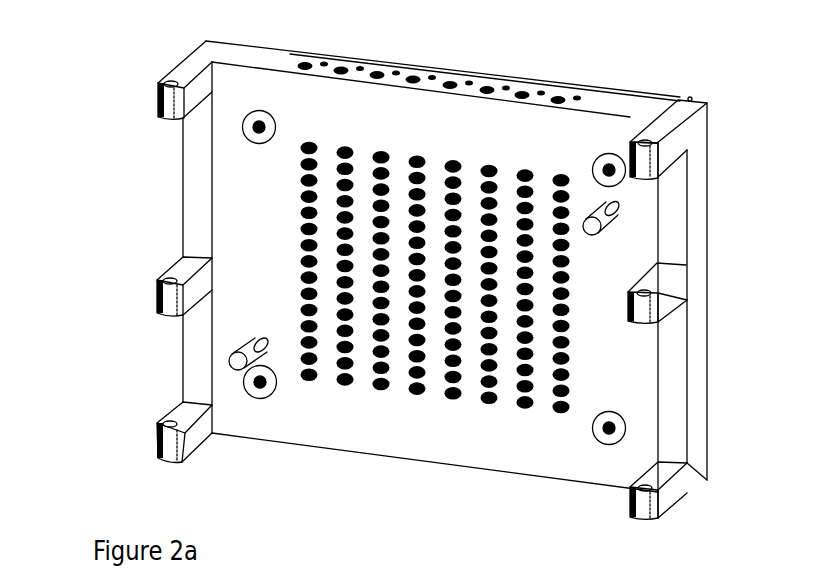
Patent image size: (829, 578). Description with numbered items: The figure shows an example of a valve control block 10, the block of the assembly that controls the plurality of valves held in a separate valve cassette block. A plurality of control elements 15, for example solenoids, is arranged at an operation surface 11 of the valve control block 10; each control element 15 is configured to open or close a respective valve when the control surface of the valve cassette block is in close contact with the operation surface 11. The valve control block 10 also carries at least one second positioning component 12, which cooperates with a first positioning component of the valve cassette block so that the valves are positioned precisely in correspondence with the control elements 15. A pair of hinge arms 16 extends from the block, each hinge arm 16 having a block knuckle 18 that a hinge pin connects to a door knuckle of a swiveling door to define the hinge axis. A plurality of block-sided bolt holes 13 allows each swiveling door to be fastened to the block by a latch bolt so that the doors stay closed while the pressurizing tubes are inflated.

The valve control block 10 is at (242, 218).
The operation surface 11 is at (479, 443).
The second positioning component 12 is at (257, 342).
The block-sided bolt hole 13 is at (188, 64).
The control element 15 is at (382, 390).
The hinge arm 16 is at (200, 217).
The block knuckle 18 is at (170, 302).